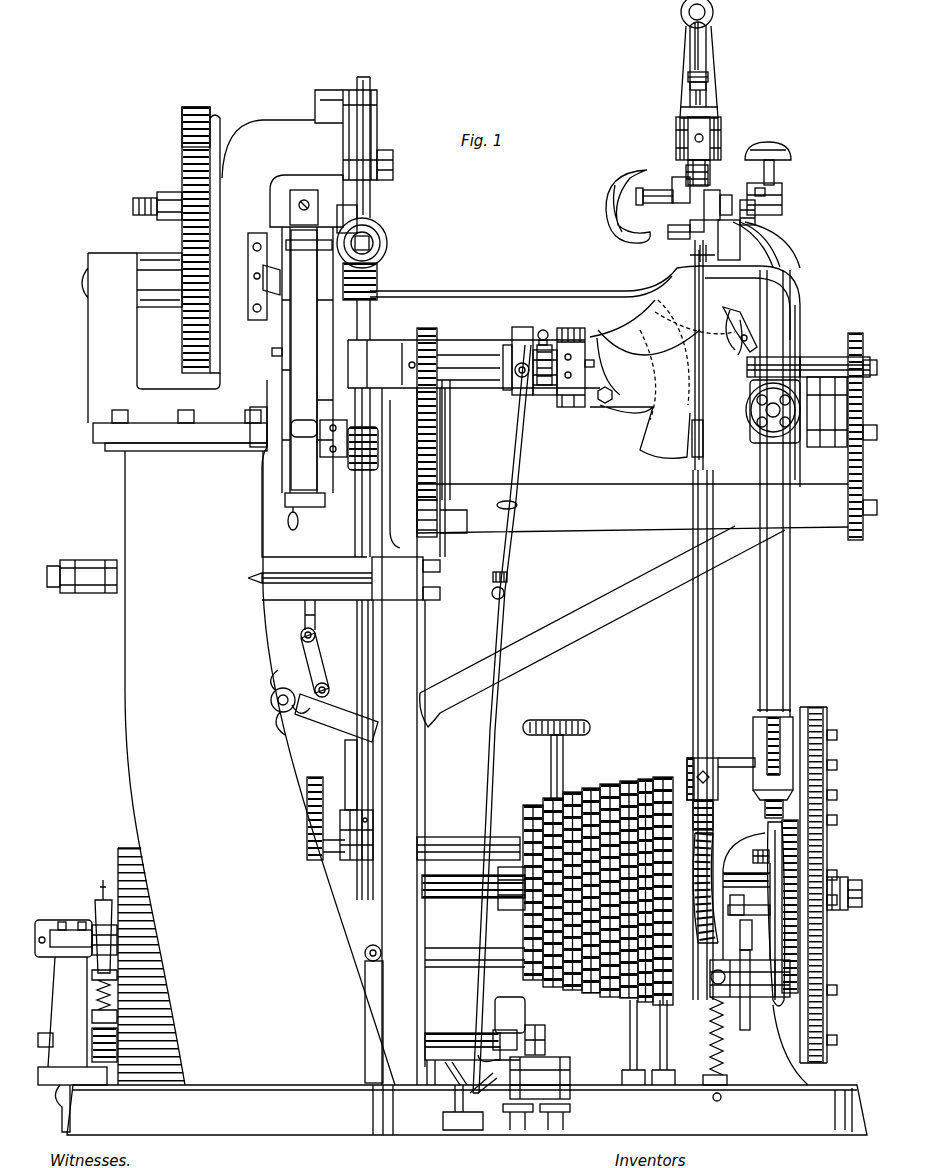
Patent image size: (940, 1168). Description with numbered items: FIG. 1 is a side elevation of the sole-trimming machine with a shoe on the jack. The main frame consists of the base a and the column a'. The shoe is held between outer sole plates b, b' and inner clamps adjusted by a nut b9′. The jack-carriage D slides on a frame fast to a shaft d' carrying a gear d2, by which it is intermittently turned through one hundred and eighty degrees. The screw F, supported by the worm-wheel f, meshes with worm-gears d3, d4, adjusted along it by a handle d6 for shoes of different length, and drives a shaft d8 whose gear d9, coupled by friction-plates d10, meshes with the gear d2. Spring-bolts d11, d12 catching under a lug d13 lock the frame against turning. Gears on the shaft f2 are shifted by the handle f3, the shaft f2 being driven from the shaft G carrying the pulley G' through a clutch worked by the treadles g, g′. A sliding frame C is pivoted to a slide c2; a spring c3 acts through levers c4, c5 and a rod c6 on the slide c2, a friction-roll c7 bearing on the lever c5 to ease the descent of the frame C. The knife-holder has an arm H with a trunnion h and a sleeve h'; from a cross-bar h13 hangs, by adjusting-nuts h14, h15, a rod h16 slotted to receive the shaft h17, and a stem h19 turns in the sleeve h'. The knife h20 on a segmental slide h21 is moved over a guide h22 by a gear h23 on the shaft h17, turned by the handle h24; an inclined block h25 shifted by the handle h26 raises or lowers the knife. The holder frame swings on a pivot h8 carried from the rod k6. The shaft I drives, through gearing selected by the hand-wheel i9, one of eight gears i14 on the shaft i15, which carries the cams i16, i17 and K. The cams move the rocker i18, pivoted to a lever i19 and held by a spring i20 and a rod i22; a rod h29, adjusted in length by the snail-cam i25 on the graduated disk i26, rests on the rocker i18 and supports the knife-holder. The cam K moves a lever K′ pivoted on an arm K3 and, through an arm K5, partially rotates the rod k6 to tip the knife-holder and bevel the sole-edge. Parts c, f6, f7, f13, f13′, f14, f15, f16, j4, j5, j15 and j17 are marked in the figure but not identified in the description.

The base a is at (467, 1110).
The column a' is at (238, 669).
The outer plate b is at (747, 363).
The outer plate b' is at (717, 383).
The nut b9′ is at (547, 328).
The rock shaft c is at (425, 1085).
The slide c2 is at (365, 955).
The spring c3 is at (112, 560).
The lever c4 is at (315, 648).
The lever c5 is at (335, 711).
The rod c6 is at (372, 764).
The friction-roll c7 is at (290, 712).
The sliding frame C is at (406, 736).
The shaft d' is at (122, 288).
The gear d2 is at (190, 335).
The worm-gear d3 is at (357, 471).
The worm-gear d4 is at (377, 282).
The handle d6 is at (299, 522).
The shaft d8 is at (240, 200).
The gear d9 is at (182, 110).
The friction-plates d10 is at (226, 137).
The spring-bolt d11 is at (272, 353).
The spring-bolt d12 is at (290, 212).
The lug d13 is at (263, 280).
The jack-carriage D is at (278, 488).
The screw F is at (387, 232).
The worm-wheel f is at (378, 140).
The shaft f2 is at (370, 318).
The handle f3 is at (645, 425).
The bearing block f6 is at (577, 392).
The collar f7 is at (548, 395).
The lever block f13 is at (527, 390).
The connecting rod f13′ is at (513, 455).
The rod foot f14 is at (463, 1131).
The rod link f15 is at (492, 1095).
The arm gear f16 is at (417, 410).
The treadle g is at (498, 1062).
The treadle g′ is at (568, 1112).
The shaft G is at (76, 1009).
The pulley G' is at (125, 967).
The trunnion h is at (710, 14).
The sleeve h' is at (689, 151).
The pivot h8 is at (721, 204).
The cross-bar h13 is at (710, 78).
The adjusting-nut h14 is at (690, 72).
The adjusting-nut h15 is at (690, 86).
The rod h16 is at (702, 98).
The shaft h17 is at (755, 216).
The stem h19 is at (708, 168).
The knife h20 is at (692, 240).
The segmental slide h21 is at (695, 255).
The segmental guide h22 is at (758, 244).
The gear h23 is at (672, 206).
The handle h24 is at (608, 208).
The inclined block h25 is at (676, 190).
The handle h26 is at (785, 148).
The rod h29 is at (790, 645).
The arm H is at (718, 110).
The shaft I is at (447, 836).
The hand-wheel i9 is at (580, 720).
The gears i14 is at (600, 795).
The shaft i15 is at (460, 946).
The cam i16 is at (800, 922).
The cam i17 is at (828, 834).
The rocker i18 is at (786, 830).
The lever i19 is at (790, 998).
The spring i20 is at (710, 1040).
The rod i22 is at (755, 852).
The snail-cam i25 is at (803, 360).
The graduated disk i26 is at (752, 432).
The arm j4 is at (748, 356).
The bolt j5 is at (868, 380).
The disc j15 is at (764, 372).
The gear j17 is at (840, 548).
The rod k6 is at (713, 622).
The cam K is at (690, 934).
The lever K′ is at (693, 815).
The arm K3 is at (725, 840).
The arm K5 is at (690, 775).